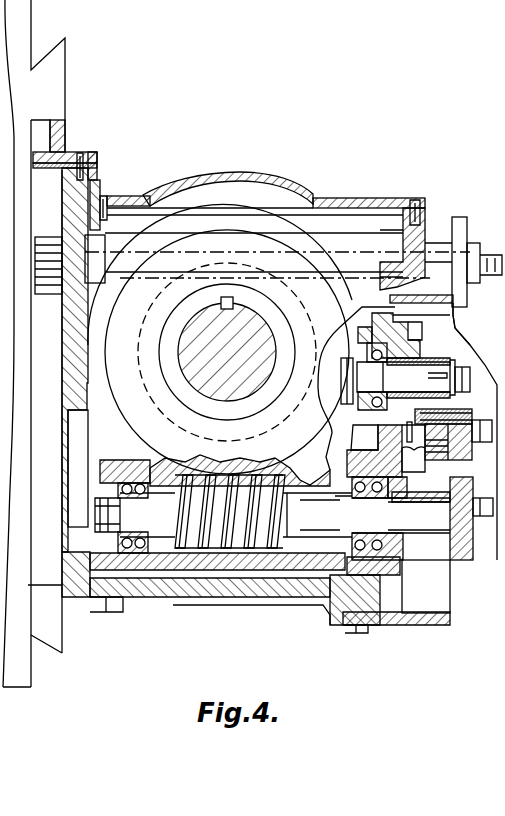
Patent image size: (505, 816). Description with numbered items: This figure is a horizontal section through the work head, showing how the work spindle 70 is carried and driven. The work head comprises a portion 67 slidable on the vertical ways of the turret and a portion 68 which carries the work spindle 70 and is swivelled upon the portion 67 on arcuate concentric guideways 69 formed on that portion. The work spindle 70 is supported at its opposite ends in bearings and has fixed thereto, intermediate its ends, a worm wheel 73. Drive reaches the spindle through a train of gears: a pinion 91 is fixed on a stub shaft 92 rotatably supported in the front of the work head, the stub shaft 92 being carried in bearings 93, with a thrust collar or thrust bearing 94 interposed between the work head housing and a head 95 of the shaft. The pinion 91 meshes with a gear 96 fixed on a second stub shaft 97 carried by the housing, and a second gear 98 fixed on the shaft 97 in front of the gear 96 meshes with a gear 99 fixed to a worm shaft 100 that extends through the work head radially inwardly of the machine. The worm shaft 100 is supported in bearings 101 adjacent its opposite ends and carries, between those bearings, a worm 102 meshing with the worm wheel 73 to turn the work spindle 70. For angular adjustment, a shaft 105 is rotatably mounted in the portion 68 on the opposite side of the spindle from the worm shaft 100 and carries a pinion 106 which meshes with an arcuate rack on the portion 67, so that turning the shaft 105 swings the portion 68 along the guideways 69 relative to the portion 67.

The portion 67 is at (57, 101).
The portion 68 is at (84, 197).
The arcuate concentric guideways 69 is at (54, 645).
The work spindle 70 is at (197, 337).
The worm wheel 73 is at (253, 462).
The pinion 91 is at (455, 356).
The stub shaft 92 is at (412, 370).
The bearings 93 is at (386, 449).
The thrust collar or thrust bearing 94 is at (346, 400).
The head 95 is at (341, 372).
The gear 96 is at (442, 468).
The second stub shaft 97 is at (470, 392).
The second gear 98 is at (468, 462).
The gear 99 is at (466, 553).
The worm shaft 100 is at (313, 526).
The bearings 101 is at (142, 549).
The worm 102 is at (221, 547).
The shaft 105 is at (375, 246).
The pinion 106 is at (50, 297).